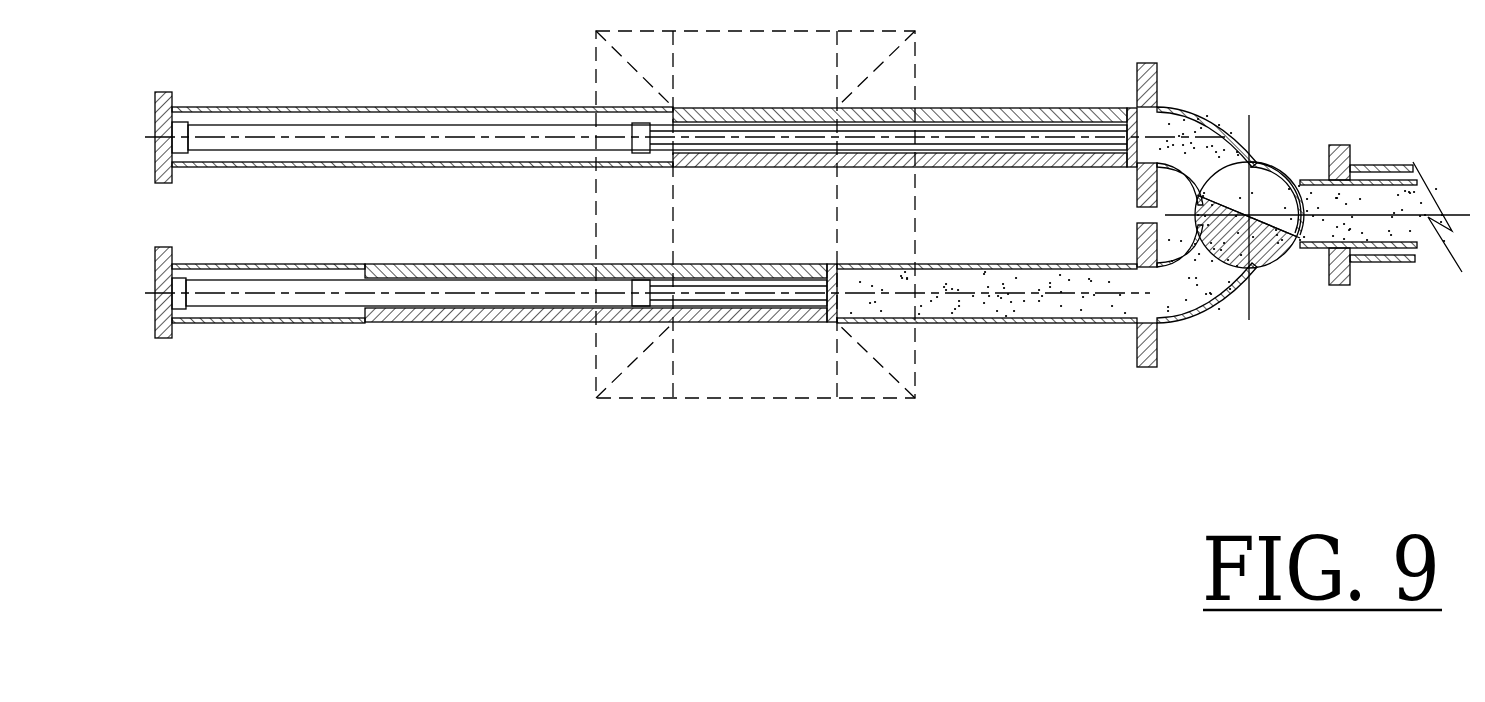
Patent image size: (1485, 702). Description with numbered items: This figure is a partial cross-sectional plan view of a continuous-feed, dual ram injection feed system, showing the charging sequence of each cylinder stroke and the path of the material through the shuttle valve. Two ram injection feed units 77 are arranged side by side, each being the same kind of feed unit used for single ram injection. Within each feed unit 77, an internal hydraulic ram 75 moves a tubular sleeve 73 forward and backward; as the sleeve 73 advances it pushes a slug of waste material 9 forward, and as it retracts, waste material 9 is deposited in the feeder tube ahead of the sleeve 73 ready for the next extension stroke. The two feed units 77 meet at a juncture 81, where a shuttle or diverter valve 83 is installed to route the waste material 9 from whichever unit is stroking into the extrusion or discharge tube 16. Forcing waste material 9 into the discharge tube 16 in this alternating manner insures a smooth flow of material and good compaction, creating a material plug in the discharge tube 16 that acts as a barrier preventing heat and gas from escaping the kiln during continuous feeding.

The waste material 9 is at (1417, 205).
The extrusion or discharge tube 16 is at (1386, 125).
The tubular sleeve 73 is at (1158, 128).
The hydraulic ram 75 is at (322, 127).
The ram injection feed unit 77 is at (551, 72).
The juncture 81 is at (1250, 157).
The shuttle or diverter valve 83 is at (1270, 310).